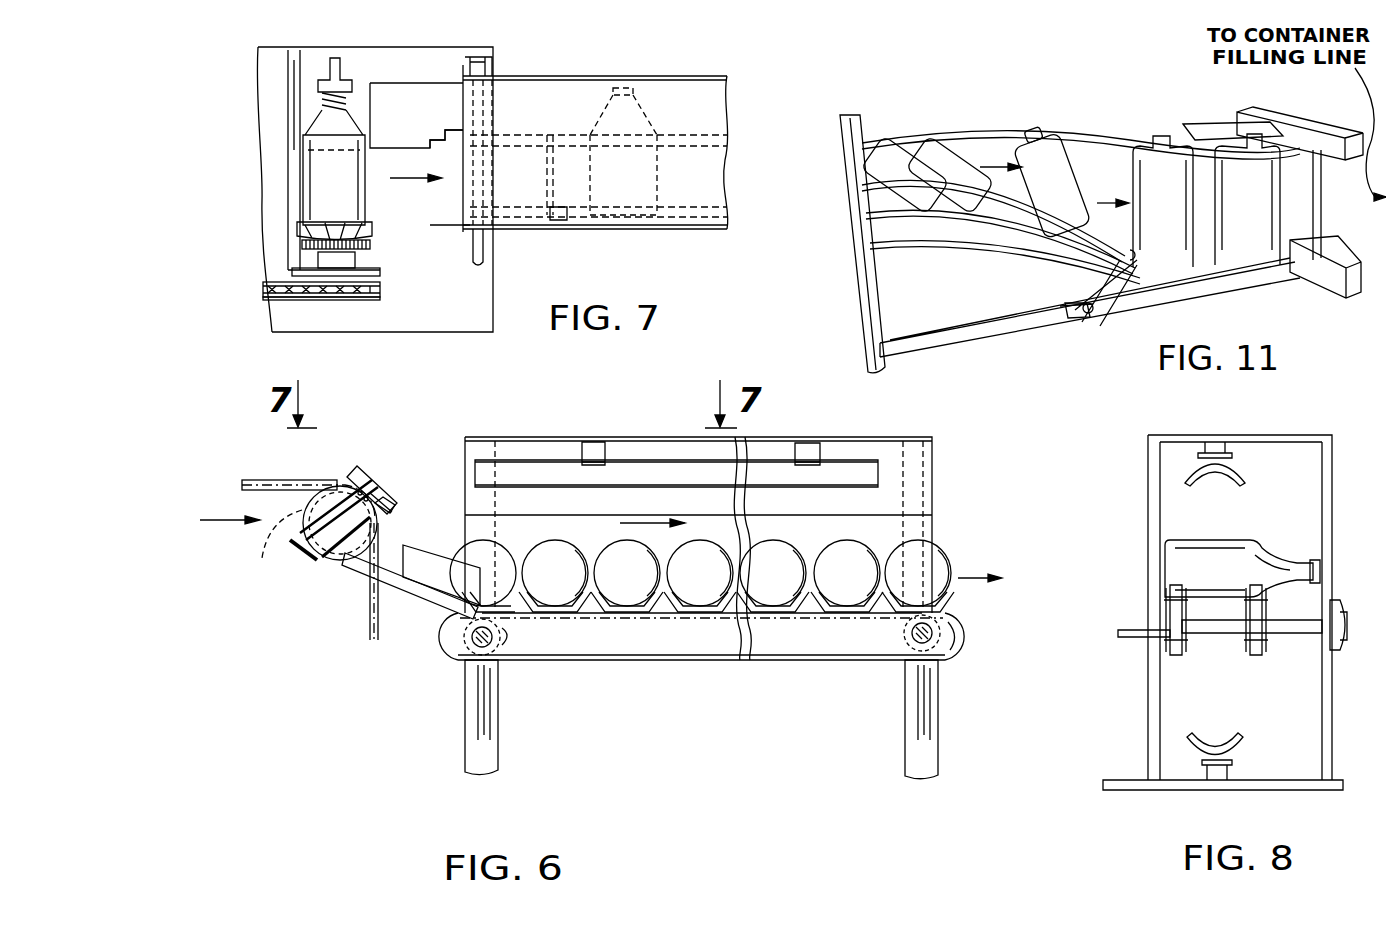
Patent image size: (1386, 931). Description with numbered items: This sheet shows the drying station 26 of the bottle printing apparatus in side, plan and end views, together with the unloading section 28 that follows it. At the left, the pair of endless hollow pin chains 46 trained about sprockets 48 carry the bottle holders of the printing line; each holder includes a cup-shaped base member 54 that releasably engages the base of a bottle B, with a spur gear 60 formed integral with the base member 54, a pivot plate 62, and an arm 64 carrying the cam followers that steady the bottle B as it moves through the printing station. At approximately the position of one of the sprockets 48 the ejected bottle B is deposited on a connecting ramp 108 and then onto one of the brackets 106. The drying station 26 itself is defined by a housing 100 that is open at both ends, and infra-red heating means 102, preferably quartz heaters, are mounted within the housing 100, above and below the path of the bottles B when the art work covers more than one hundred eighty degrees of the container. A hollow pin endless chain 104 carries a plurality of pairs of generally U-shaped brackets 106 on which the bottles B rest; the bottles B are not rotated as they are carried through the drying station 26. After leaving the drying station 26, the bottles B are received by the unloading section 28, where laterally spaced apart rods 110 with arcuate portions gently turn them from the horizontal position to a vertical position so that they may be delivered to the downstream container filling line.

In FIG. 7, the drying station 26 is at (567, 56).
In FIG. 11, the drying station 26 is at (848, 110).
In FIG. 6, the drying station 26 is at (916, 430).
In FIG. 8, the drying station 26 is at (1337, 430).
In FIG. 11, the transfer conveyor 28 is at (1090, 78).
In FIG. 7, the hollow pin chains 46 is at (292, 297).
In FIG. 6, the hollow pin chains 46 is at (370, 618).
In FIG. 7, the sprockets 48 is at (350, 297).
In FIG. 7, the cup-shaped base member 54 is at (374, 224).
In FIG. 6, the cup-shaped base member 54 is at (323, 490).
In FIG. 7, the spur gear 60 is at (302, 244).
In FIG. 6, the spur gear 60 is at (274, 552).
In FIG. 6, the pivot plate 62 is at (357, 475).
In FIG. 6, the arm 64 is at (373, 493).
In FIG. 6, the housing 100 is at (505, 437).
In FIG. 6, the infra-red heating means 102 is at (623, 460).
In FIG. 8, the infra-red heating means 102 is at (1190, 479).
In FIG. 7, the hollow pin endless chain 104 is at (693, 143).
In FIG. 6, the hollow pin endless chain 104 is at (588, 660).
In FIG. 8, the hollow pin endless chain 104 is at (1175, 652).
In FIG. 6, the U-shaped brackets 106 is at (583, 602).
In FIG. 8, the U-shaped brackets 106 is at (1175, 597).
In FIG. 7, the connecting ramp 108 is at (430, 227).
In FIG. 6, the connecting ramp 108 is at (440, 593).
In FIG. 11, the rods 110 is at (958, 180).
In FIG. 7, the bottles B is at (313, 177).
In FIG. 11, the bottles B is at (1205, 165).
In FIG. 6, the bottles B is at (700, 573).
In FIG. 8, the bottles B is at (1178, 565).